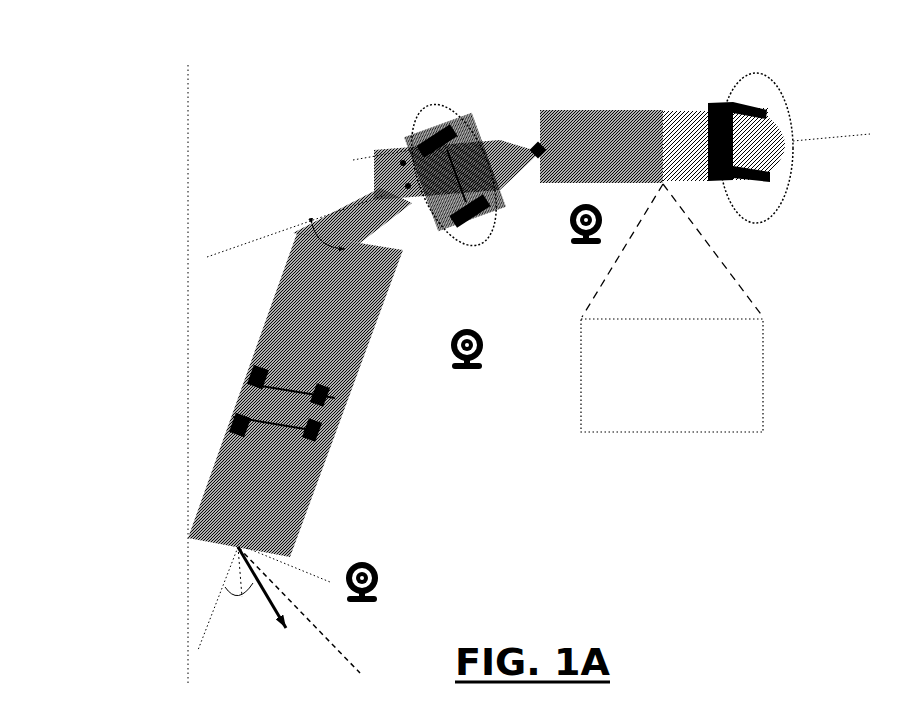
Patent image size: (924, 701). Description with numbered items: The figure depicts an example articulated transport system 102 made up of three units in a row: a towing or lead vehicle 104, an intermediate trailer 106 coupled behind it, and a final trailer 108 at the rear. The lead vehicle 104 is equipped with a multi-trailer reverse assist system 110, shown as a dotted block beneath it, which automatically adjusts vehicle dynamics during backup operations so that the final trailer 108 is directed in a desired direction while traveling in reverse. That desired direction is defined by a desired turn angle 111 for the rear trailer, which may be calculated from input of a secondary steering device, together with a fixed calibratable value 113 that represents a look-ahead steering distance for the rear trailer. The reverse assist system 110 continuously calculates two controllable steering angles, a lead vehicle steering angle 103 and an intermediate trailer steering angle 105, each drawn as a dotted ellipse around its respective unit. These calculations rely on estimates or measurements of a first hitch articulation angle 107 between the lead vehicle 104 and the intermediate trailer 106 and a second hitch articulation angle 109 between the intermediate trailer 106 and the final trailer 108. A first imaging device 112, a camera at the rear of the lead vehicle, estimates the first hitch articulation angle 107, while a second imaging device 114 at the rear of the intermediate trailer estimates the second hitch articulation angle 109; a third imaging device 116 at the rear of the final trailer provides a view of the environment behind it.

The articulated transport system 102 is at (607, 112).
The lead vehicle steering angle 103 is at (769, 223).
The lead vehicle 104 is at (653, 112).
The intermediate trailer steering angle 105 is at (488, 251).
The intermediate trailer 106 is at (400, 142).
The first hitch articulation angle 107 is at (368, 178).
The final trailer 108 is at (207, 482).
The second hitch articulation angle 109 is at (321, 211).
The multi-trailer reverse assist system 110 is at (672, 308).
The desired turn angle 111 is at (231, 616).
The first imaging device 112 is at (573, 232).
The look-ahead steering distance 113 is at (274, 607).
The second imaging device 114 is at (452, 352).
The third imaging device 116 is at (380, 568).